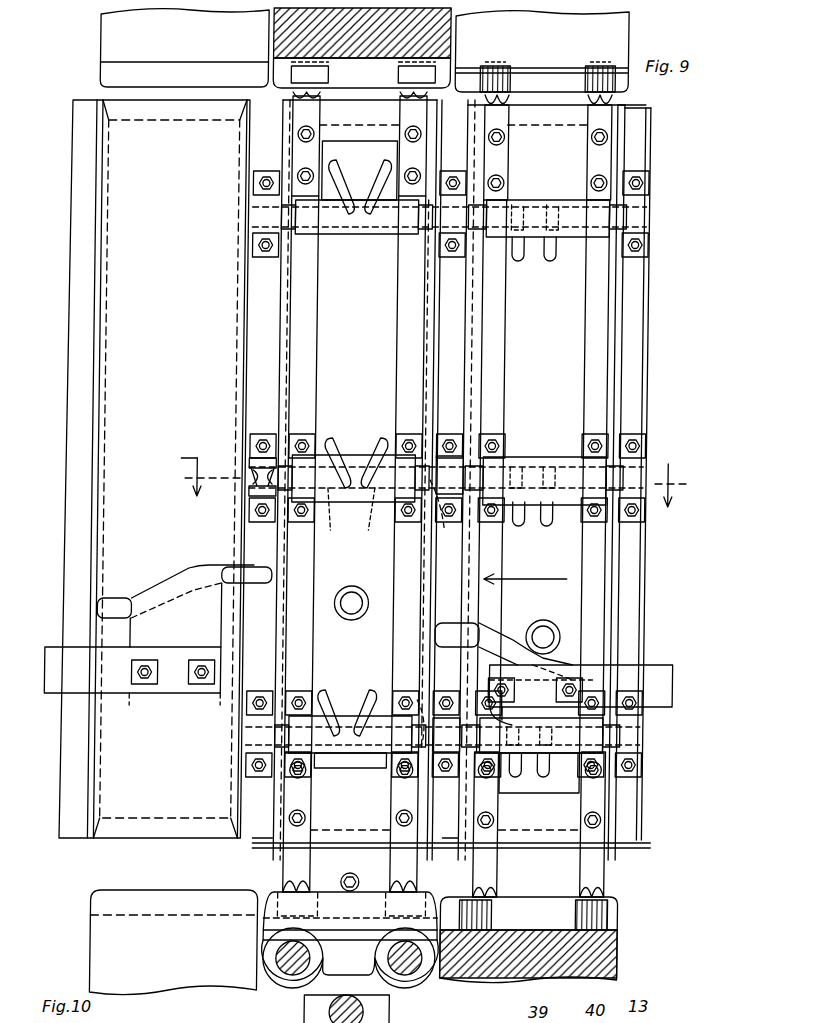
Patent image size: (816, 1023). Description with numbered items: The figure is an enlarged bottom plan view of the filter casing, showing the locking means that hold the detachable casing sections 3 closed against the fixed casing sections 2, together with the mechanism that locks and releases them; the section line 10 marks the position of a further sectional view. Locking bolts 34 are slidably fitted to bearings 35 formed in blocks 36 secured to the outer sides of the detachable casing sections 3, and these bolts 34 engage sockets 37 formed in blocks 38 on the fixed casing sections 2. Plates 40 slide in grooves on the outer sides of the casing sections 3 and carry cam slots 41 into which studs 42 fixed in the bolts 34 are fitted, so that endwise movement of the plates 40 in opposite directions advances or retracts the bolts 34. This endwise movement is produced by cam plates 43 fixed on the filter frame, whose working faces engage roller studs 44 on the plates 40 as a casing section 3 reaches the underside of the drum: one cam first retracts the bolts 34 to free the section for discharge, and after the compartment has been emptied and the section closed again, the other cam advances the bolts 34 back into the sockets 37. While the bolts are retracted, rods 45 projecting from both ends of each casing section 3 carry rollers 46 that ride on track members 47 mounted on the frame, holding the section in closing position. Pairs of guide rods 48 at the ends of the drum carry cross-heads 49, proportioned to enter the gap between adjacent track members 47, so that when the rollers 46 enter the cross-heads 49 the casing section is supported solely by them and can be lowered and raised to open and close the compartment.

The fixed casing section 2 is at (270, 846).
The detachable casing section 3 is at (154, 469).
The section line 10 is at (435, 472).
The locking bolt 34 is at (628, 218).
The bearing 35 is at (380, 502).
The block 36 is at (352, 496).
The socket 37 is at (257, 486).
The block 38 is at (256, 462).
The plate 40 is at (324, 364).
The cam slot 41 is at (382, 178).
The stud 42 is at (571, 774).
The cam plate 43 is at (176, 580).
The roller stud 44 is at (362, 588).
The rod 45 is at (402, 110).
The roller 46 is at (600, 74).
The track member 47 is at (516, 82).
The guide rod 48 is at (304, 962).
The cross-head 49 is at (362, 52).